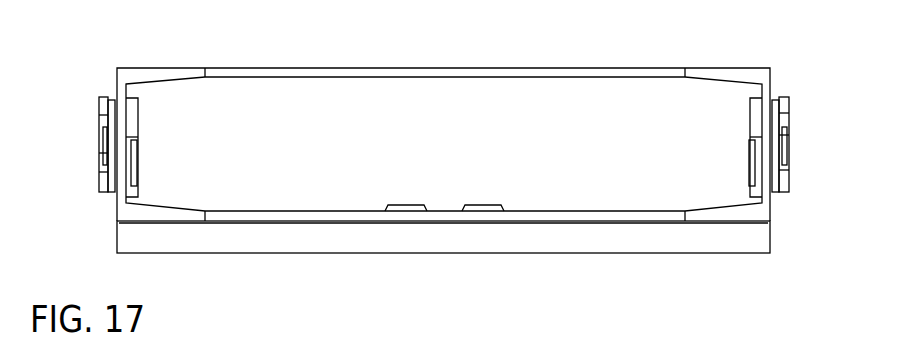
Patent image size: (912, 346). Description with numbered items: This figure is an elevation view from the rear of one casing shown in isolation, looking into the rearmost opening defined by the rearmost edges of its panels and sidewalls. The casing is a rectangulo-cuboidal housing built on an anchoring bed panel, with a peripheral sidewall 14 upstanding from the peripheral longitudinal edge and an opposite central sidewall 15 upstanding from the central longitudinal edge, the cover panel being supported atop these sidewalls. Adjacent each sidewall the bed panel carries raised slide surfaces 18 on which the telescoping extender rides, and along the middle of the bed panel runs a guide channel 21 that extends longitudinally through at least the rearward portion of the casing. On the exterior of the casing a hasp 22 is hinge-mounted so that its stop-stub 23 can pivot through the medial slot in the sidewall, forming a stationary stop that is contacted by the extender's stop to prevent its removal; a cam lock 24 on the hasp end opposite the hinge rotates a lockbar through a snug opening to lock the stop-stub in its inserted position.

The peripheral sidewall 14 is at (123, 183).
The central sidewall 15 is at (762, 177).
The raised slide surfaces 18 is at (153, 215).
The guide channel 21 is at (442, 208).
The hasp 22 is at (112, 110).
The stop-stub 23 is at (132, 108).
The cam lock 24 is at (137, 138).